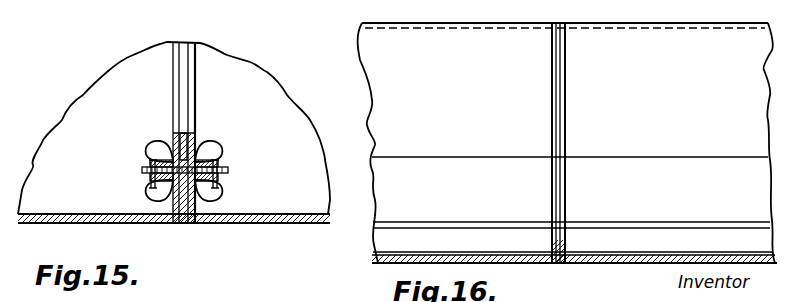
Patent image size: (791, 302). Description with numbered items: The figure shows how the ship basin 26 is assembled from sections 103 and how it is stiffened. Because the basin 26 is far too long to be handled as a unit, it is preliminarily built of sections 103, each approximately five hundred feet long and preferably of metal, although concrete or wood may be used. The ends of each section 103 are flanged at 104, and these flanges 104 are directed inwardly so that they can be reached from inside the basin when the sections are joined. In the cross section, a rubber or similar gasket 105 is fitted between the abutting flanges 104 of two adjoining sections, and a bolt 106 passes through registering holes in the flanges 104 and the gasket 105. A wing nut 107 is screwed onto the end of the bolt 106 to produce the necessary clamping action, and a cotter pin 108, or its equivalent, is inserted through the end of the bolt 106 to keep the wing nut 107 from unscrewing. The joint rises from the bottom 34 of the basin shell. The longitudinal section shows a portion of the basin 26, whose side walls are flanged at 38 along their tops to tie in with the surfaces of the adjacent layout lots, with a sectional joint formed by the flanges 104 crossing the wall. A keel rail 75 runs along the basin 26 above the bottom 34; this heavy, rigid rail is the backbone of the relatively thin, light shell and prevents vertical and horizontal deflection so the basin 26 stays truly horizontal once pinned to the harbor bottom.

In FIG. 15, the section 103 is at (252, 62).
In FIG. 16, the section 103 is at (451, 18).
In FIG. 15, the flange 104 is at (173, 133).
In FIG. 16, the flange 104 is at (580, 243).
In FIG. 15, the gasket 105 is at (196, 140).
In FIG. 15, the bolt 106 is at (228, 170).
In FIG. 15, the wing nut 107 is at (147, 190).
In FIG. 15, the cotter pin 108 is at (150, 147).
In FIG. 15, the bottom 34 is at (262, 224).
In FIG. 16, the bottom 34 is at (379, 265).
In FIG. 16, the basin 26 is at (465, 42).
In FIG. 16, the flange 38 is at (503, 27).
In FIG. 16, the keel rail 75 is at (634, 235).